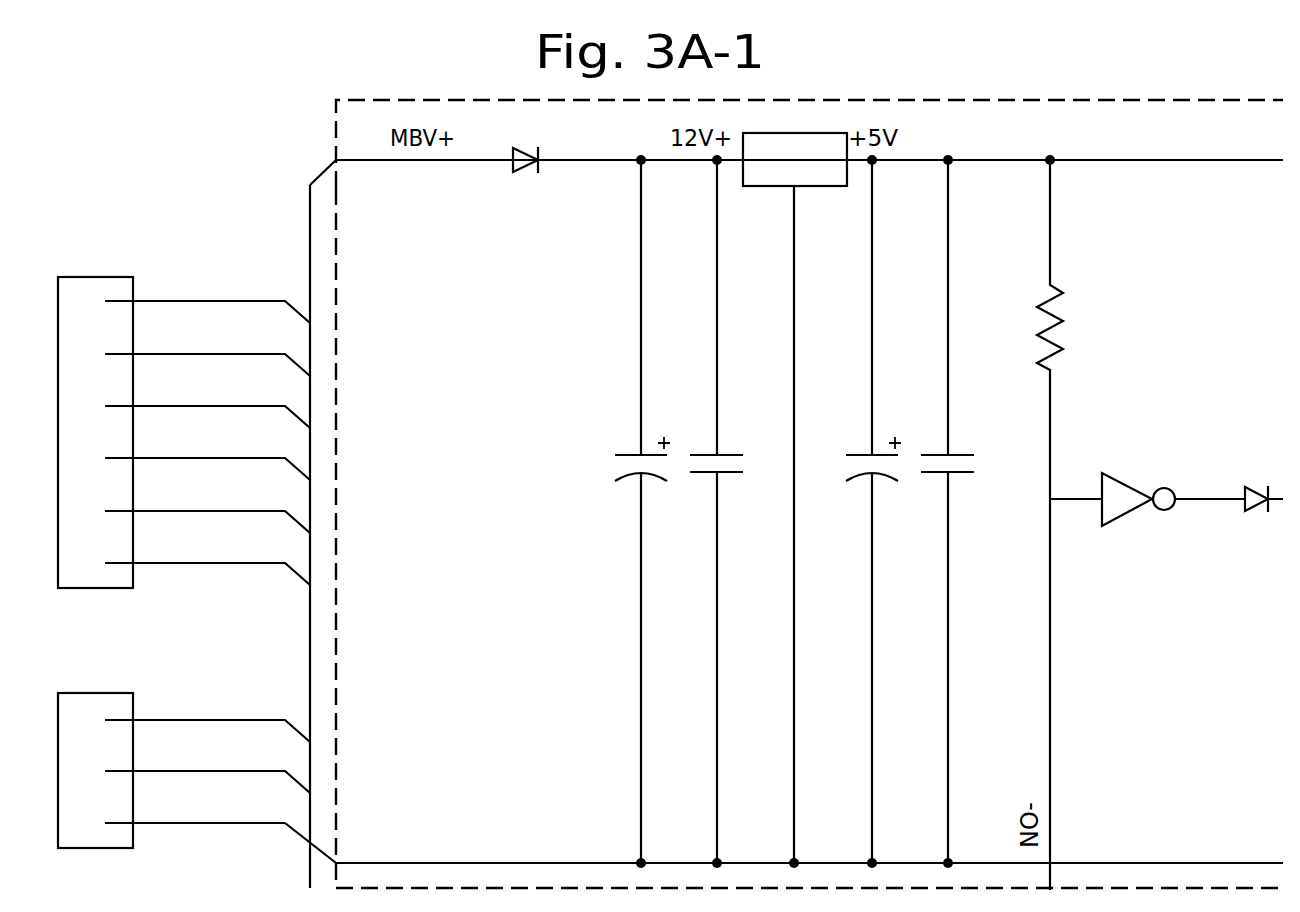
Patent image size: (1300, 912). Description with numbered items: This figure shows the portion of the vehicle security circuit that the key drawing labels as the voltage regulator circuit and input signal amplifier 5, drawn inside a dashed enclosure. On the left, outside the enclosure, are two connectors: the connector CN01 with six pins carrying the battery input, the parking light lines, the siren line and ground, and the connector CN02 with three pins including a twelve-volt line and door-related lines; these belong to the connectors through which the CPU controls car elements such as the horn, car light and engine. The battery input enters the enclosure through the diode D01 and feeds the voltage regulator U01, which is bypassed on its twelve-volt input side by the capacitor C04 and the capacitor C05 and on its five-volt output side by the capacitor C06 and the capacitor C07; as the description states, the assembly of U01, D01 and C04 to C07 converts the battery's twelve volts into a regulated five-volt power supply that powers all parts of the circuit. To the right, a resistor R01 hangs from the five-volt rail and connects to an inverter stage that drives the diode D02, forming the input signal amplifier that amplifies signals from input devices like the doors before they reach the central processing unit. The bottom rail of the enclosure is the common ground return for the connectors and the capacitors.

The voltage regulator circuit and input signal amplifier 5 is at (809, 459).
The connector CN01 is at (184, 416).
The connector CN02 is at (184, 752).
The diode D01 is at (521, 144).
The voltage regulator U01 is at (795, 498).
The capacitor C04 is at (639, 511).
The capacitor C05 is at (715, 511).
The capacitor C06 is at (871, 511).
The capacitor C07 is at (947, 511).
The resistor R01 is at (1036, 525).
The diode D02 is at (1249, 481).